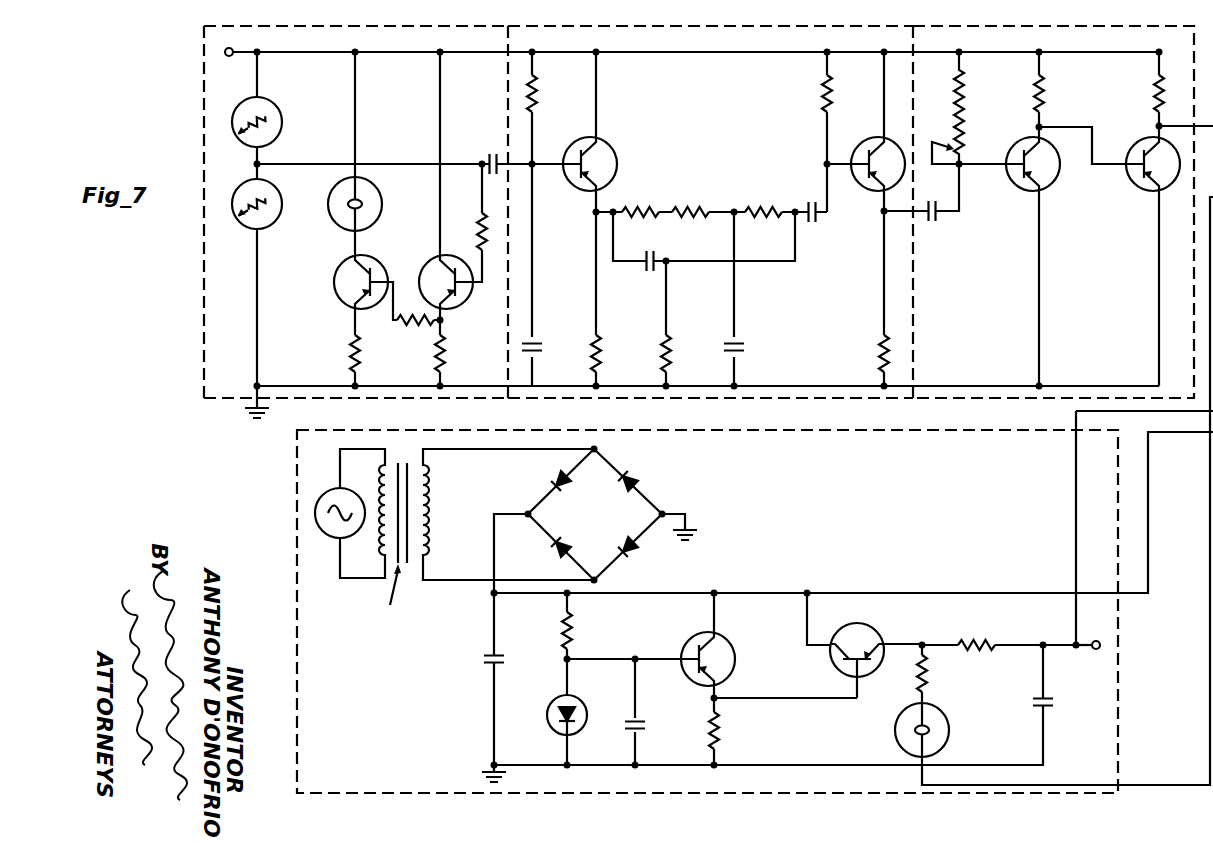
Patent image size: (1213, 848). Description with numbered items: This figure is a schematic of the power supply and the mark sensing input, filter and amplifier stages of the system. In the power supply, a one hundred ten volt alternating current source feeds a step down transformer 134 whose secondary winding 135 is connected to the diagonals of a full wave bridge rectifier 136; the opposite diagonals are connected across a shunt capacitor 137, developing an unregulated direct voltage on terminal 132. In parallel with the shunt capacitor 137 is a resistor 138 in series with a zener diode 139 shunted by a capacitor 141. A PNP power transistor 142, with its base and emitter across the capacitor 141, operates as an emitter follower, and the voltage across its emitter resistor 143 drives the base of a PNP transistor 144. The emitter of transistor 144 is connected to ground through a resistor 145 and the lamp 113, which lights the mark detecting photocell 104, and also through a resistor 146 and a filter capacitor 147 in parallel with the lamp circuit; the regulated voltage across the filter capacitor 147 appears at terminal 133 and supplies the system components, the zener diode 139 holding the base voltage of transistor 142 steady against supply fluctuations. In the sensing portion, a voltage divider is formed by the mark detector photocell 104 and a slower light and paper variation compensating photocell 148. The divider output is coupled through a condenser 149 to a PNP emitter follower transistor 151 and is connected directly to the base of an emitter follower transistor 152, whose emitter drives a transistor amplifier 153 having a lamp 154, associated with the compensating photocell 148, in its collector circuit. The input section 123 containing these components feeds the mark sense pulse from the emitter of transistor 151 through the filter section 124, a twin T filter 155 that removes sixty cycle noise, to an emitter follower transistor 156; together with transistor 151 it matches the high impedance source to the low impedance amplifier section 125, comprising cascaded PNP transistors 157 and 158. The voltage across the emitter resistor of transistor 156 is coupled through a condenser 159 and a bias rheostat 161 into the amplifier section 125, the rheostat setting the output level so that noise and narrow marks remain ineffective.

The terminal 133 is at (229, 57).
The mark detecting photocell 104 is at (281, 112).
The light and paper variation compensating photocell 148 is at (268, 226).
The lamp 154 is at (383, 196).
The transistor amplifier 153 is at (380, 262).
The emitter follower transistor 152 is at (464, 305).
The condenser 149 is at (494, 155).
The PNP emitter follower transistor 151 is at (617, 160).
The twin T filter 155 is at (718, 251).
The emitter follower transistor 156 is at (862, 186).
The condenser 159 is at (930, 222).
The bias rheostat 161 is at (934, 140).
The PNP transistor 157 is at (1016, 187).
The PNP transistor 158 is at (1136, 187).
The input circuit section 123 is at (204, 318).
The filter section 124 is at (680, 396).
The amplifier section 125 is at (960, 396).
The secondary winding 135 is at (430, 492).
The step down transformer 134 is at (387, 549).
The full wave bridge rectifier 136 is at (610, 526).
The terminal 132 is at (490, 596).
The shunt capacitor 137 is at (485, 665).
The resistor 138 is at (565, 635).
The zener diode 139 is at (549, 709).
The capacitor 141 is at (641, 718).
The PNP power transistor 142 is at (752, 630).
The emitter resistor 143 is at (723, 727).
The PNP transistor 144 is at (876, 632).
The resistor 145 is at (930, 677).
The lamp 113 is at (949, 730).
The resistor 146 is at (1016, 622).
The filter capacitor 147 is at (1048, 704).